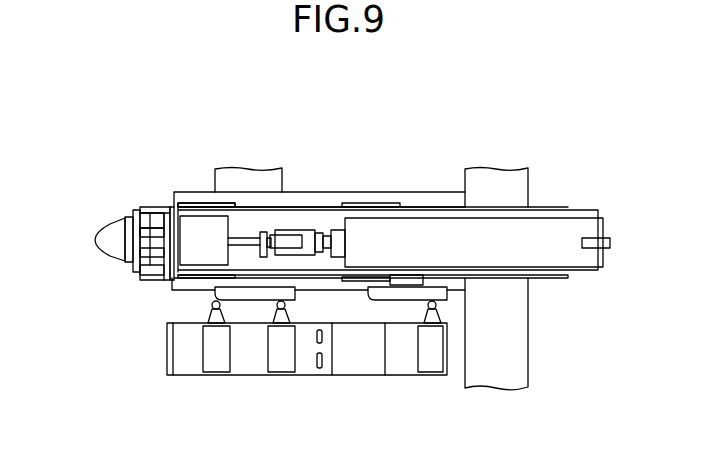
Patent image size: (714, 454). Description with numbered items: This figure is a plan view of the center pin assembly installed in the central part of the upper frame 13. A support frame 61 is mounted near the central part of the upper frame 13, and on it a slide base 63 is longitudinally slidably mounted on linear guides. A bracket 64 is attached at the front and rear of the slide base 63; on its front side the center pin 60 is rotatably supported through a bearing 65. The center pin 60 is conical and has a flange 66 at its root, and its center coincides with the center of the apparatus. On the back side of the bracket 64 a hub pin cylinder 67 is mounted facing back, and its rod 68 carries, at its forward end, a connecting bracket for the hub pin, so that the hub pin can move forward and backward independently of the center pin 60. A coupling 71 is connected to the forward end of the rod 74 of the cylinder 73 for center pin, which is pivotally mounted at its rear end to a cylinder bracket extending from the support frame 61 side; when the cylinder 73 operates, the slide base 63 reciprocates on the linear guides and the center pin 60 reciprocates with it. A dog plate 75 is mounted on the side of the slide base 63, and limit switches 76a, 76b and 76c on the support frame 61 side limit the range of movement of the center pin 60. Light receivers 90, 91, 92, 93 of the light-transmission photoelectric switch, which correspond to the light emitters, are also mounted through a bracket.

The upper frame 13 is at (530, 370).
The center pin 60 is at (116, 250).
The support frame 61 is at (380, 192).
The slide base 63 is at (443, 210).
The bracket 64 is at (183, 222).
The bearing 65 is at (170, 205).
The flange 66 is at (138, 214).
The hub pin cylinder 67 is at (217, 225).
The rod 68 is at (245, 239).
The coupling 71 is at (287, 240).
The cylinder for center pin 73 is at (553, 225).
The rod 74 is at (325, 238).
The dog plate 75 is at (287, 292).
The limit switch 76a is at (430, 365).
The limit switch 76b is at (213, 377).
The limit switch 76c is at (217, 365).
The light receiver 90 is at (140, 283).
The light receiver 91 is at (143, 240).
The light receiver 92 is at (146, 211).
The light receiver 93 is at (156, 209).